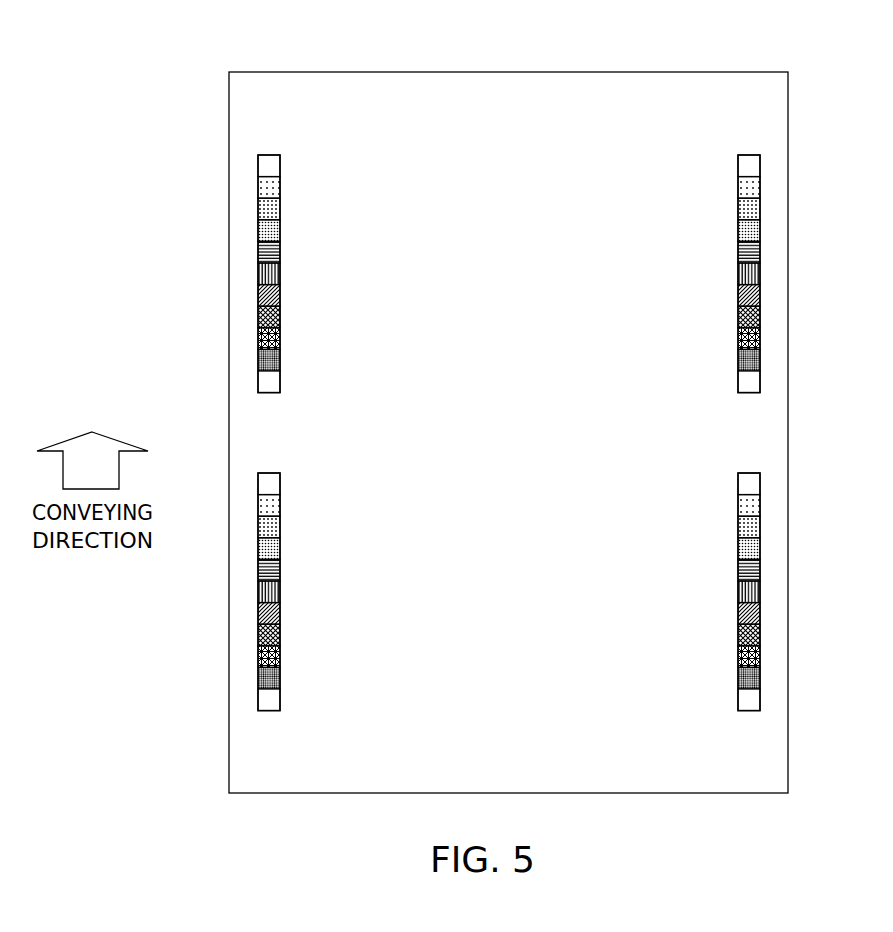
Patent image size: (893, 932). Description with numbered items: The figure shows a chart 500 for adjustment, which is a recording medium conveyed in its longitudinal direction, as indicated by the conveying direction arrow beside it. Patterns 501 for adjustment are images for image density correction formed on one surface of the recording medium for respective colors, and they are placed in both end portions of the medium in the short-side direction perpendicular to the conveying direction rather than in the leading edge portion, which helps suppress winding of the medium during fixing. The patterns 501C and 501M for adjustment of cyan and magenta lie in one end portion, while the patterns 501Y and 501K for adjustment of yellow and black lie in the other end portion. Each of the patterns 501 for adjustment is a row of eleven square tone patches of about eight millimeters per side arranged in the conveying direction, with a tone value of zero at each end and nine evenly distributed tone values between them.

The chart for adjustment 500 is at (557, 72).
The patterns for adjustment 501 is at (335, 50).
The pattern for adjustment of cyan 501C is at (359, 125).
The pattern for adjustment of yellow 501Y is at (702, 153).
The pattern for adjustment of magenta 501M is at (357, 445).
The pattern for adjustment of black 501K is at (702, 473).